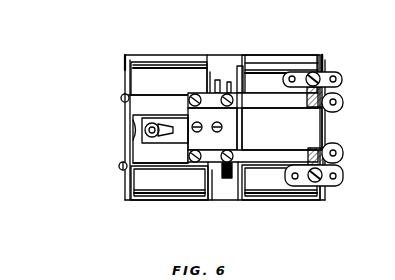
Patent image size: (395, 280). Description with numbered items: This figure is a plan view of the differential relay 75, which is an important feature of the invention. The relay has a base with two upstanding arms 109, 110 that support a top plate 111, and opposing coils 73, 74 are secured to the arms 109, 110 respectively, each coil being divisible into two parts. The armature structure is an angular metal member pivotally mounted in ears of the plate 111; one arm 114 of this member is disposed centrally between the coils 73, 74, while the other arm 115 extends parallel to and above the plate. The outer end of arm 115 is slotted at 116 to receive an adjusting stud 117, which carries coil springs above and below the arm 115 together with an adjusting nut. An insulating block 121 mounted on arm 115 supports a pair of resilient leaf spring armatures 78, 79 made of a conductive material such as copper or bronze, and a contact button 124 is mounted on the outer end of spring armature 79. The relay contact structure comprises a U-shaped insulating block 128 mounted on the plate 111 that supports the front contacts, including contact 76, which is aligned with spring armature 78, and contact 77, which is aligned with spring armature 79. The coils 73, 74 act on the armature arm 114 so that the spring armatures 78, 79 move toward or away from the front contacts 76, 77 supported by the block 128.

The coil 73 is at (182, 60).
The coil 74 is at (282, 49).
The differential relay 75 is at (88, 119).
The front contact 76 is at (323, 94).
The front contact 77 is at (330, 150).
The leaf spring armature 78 is at (278, 112).
The leaf spring armature 79 is at (270, 153).
The upstanding arm 109 is at (125, 62).
The upstanding arm 110 is at (325, 70).
The top plate 111 is at (123, 163).
The arm 114 is at (227, 180).
The arm 115 is at (166, 143).
The slot 116 is at (172, 113).
The adjusting stud 117 is at (140, 128).
The insulating block 121 is at (212, 92).
The contact button 124 is at (140, 131).
The U-shaped insulating block 128 is at (325, 128).